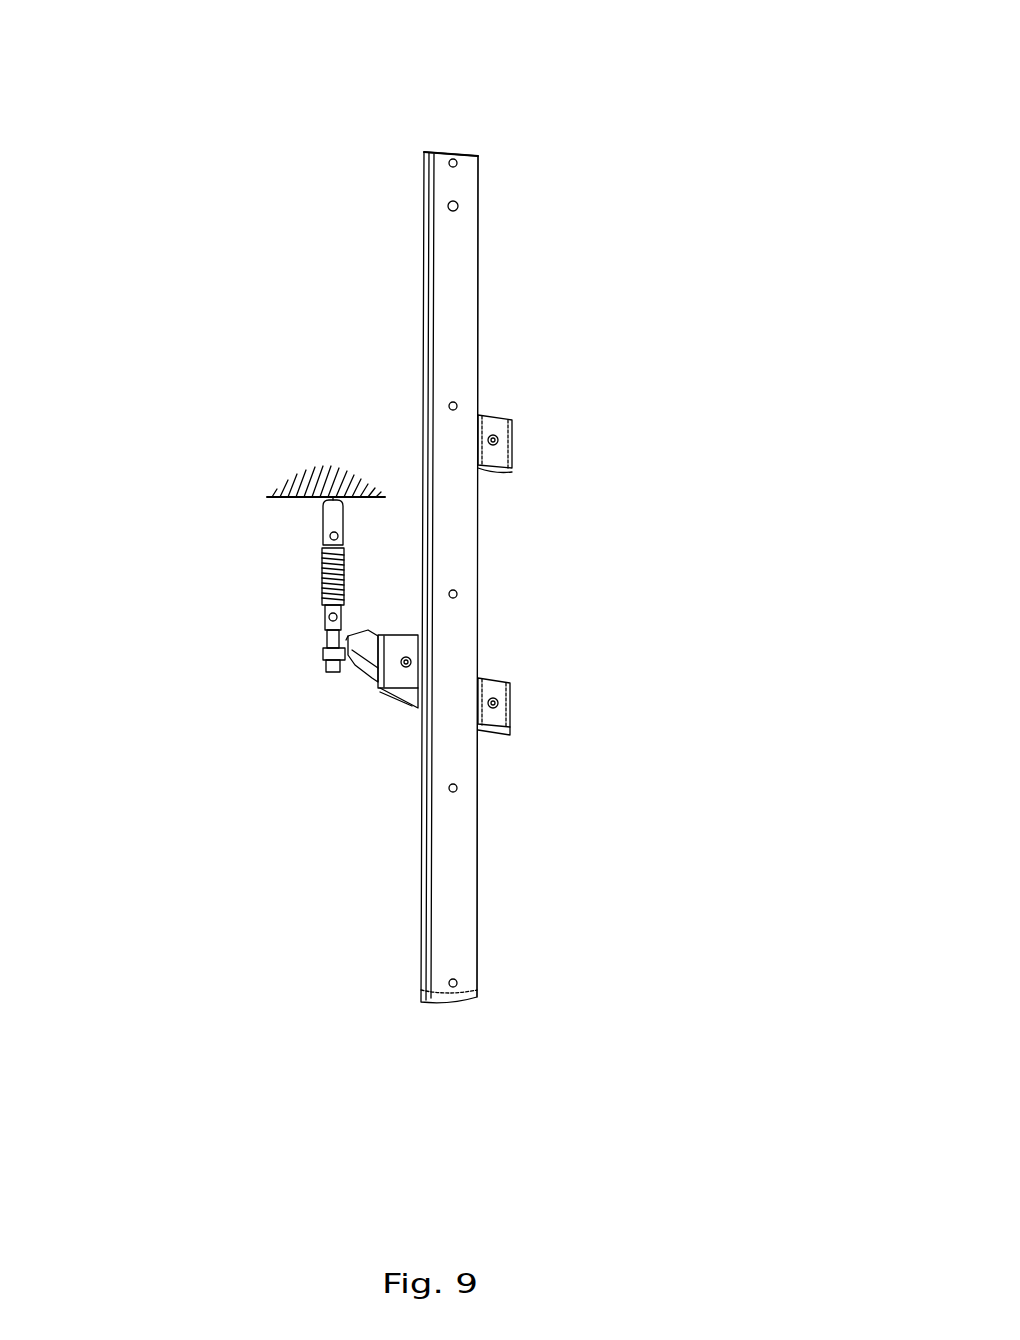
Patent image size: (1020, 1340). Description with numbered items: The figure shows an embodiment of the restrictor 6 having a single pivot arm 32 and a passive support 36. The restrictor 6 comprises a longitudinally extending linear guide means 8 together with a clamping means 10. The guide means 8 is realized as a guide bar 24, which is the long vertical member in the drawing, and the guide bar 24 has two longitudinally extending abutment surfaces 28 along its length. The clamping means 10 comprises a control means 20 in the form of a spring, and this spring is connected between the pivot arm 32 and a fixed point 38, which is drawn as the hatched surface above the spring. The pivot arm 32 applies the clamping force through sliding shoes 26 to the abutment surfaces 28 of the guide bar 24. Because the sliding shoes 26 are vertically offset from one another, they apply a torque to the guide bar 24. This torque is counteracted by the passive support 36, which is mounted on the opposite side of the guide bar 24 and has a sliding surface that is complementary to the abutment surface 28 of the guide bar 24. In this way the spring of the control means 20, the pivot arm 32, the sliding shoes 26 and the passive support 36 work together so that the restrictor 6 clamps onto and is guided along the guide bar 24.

The restrictor 6 is at (233, 240).
The linear guide means 8 is at (476, 125).
The clamping means 10 is at (262, 545).
The control means 20 is at (322, 615).
The guide bar 24 is at (455, 302).
The sliding shoes 26 is at (398, 674).
The abutment surfaces 28 is at (418, 200).
The pivot arm 32 is at (372, 662).
The passive support 36 is at (497, 448).
The fixed point 38 is at (300, 467).